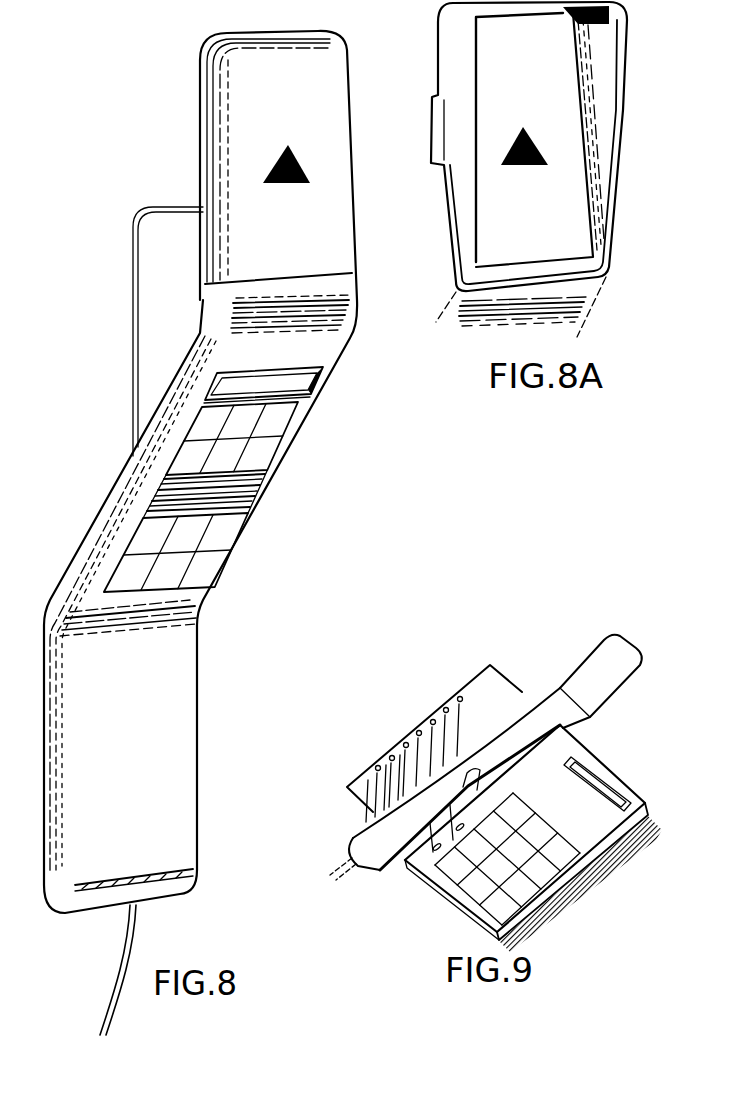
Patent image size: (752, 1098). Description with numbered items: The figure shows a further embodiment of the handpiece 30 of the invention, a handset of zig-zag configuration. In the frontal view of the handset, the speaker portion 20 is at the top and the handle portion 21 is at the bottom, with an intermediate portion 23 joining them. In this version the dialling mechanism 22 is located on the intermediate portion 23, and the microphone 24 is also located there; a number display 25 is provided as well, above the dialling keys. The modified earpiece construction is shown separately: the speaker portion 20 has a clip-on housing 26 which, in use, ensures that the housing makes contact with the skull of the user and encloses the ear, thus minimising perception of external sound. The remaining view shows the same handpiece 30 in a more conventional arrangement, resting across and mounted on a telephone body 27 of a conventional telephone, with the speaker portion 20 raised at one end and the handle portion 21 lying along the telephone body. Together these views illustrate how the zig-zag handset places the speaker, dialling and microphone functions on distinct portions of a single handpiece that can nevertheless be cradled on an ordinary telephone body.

In FIG. 8, the speaker portion 20 is at (229, 144).
In FIG. 8A, the speaker portion 20 is at (578, 200).
In FIG. 9, the speaker portion 20 is at (588, 660).
In FIG. 8, the handle portion 21 is at (163, 785).
In FIG. 9, the handle portion 21 is at (380, 848).
In FIG. 8, the dialling mechanism 22 is at (232, 524).
In FIG. 8, the intermediate portion 23 is at (310, 447).
In FIG. 8, the microphone 24 is at (250, 493).
In FIG. 8, the number display 25 is at (294, 391).
In FIG. 8A, the clip-on housing 26 is at (626, 100).
In FIG. 9, the telephone body 27 is at (585, 838).
In FIG. 8, the handpiece 30 is at (86, 516).
In FIG. 9, the handpiece 30 is at (494, 751).